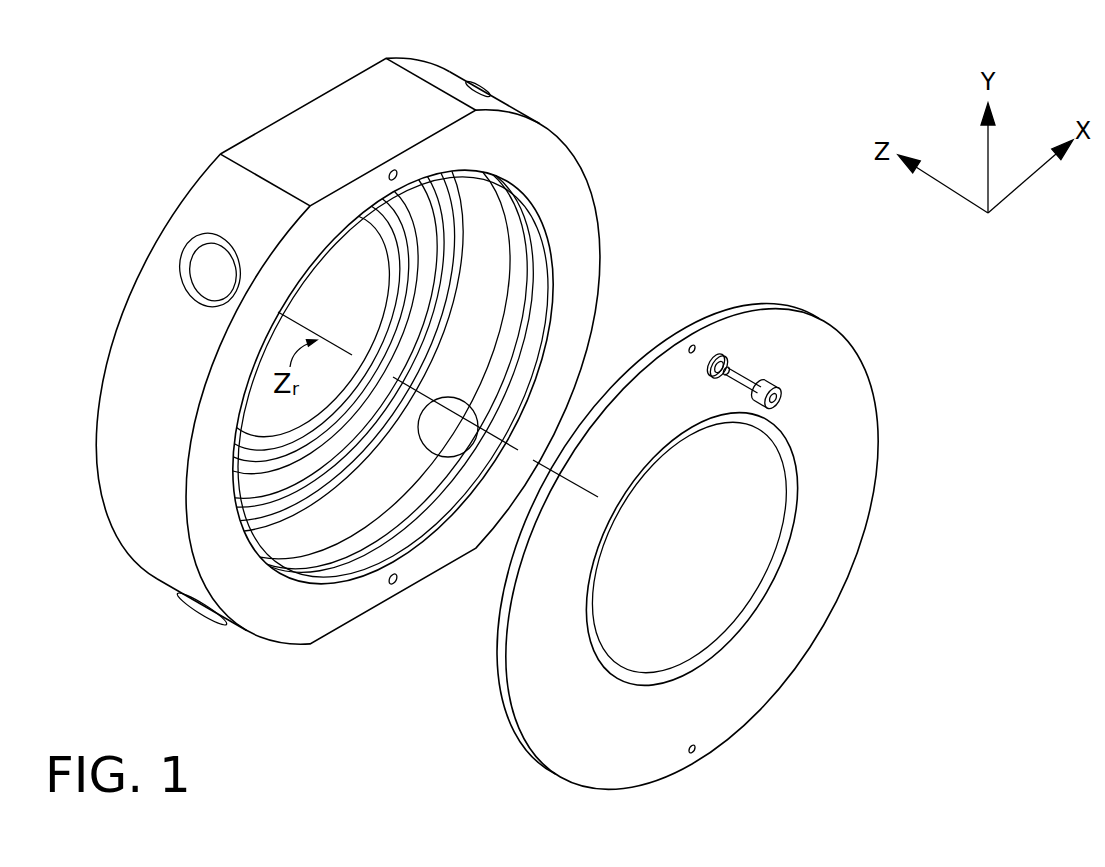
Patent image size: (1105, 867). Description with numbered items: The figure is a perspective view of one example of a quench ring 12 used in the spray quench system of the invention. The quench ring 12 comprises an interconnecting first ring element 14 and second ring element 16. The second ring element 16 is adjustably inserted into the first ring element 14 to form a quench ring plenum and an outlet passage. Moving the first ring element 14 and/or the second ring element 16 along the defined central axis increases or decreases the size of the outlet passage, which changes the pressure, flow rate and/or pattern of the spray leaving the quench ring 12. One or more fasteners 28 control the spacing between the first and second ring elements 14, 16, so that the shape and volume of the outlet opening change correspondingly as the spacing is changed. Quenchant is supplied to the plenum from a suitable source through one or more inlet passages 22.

The quench ring 12 is at (692, 140).
The first ring element 14 is at (320, 137).
The second ring element 16 is at (772, 317).
The inlet passages 22 is at (473, 87).
The fasteners 28 is at (753, 380).